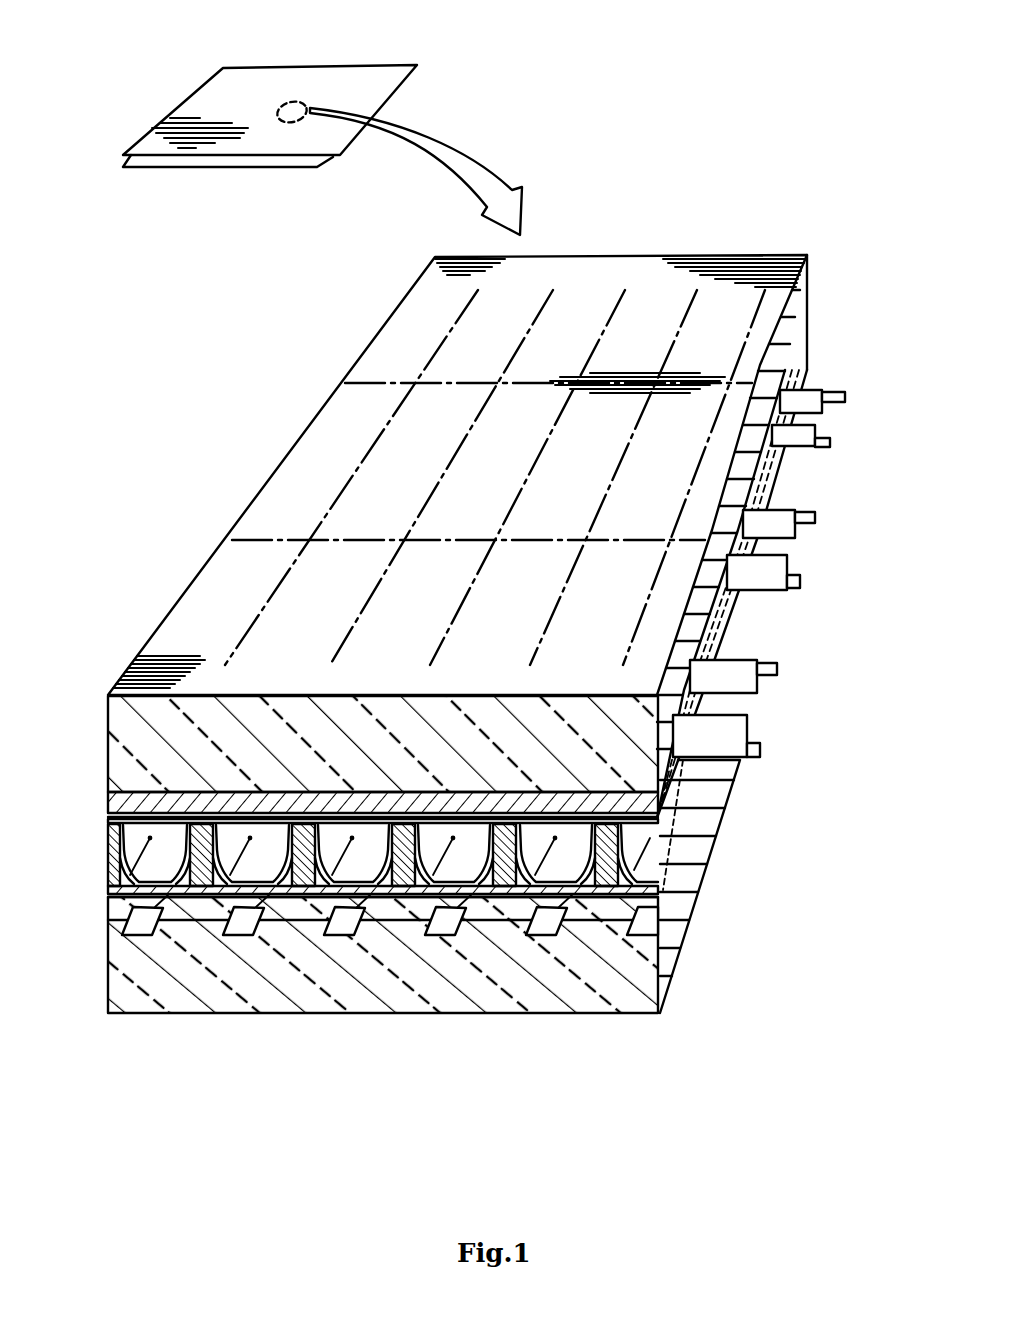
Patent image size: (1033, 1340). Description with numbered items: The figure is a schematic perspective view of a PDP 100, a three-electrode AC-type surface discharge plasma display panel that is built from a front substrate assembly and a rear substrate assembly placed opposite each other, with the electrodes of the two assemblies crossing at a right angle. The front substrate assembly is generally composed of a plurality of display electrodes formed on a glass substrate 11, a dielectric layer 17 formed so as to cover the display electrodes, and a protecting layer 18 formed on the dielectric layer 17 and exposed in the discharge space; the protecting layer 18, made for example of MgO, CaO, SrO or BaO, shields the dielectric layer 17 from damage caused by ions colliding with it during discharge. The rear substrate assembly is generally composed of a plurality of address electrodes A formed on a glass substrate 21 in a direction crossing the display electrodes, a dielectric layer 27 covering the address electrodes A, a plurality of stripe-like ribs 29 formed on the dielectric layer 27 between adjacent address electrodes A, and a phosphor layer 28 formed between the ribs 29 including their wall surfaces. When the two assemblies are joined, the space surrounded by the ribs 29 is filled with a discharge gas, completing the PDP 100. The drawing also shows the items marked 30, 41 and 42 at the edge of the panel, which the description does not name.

The PDP 100 is at (328, 35).
The glass substrate 11 is at (412, 72).
The glass substrate 21 is at (258, 168).
The dielectric layer 17 is at (108, 800).
The protecting layer 18 is at (108, 821).
The dielectric layer 27 is at (108, 900).
The phosphor layer 28 is at (258, 935).
The stripe-like ribs 29 is at (188, 892).
The barrier rib 30 is at (660, 846).
The connector 41 is at (712, 745).
The flexible wiring board 42 is at (762, 752).
The address electrodes A is at (200, 922).